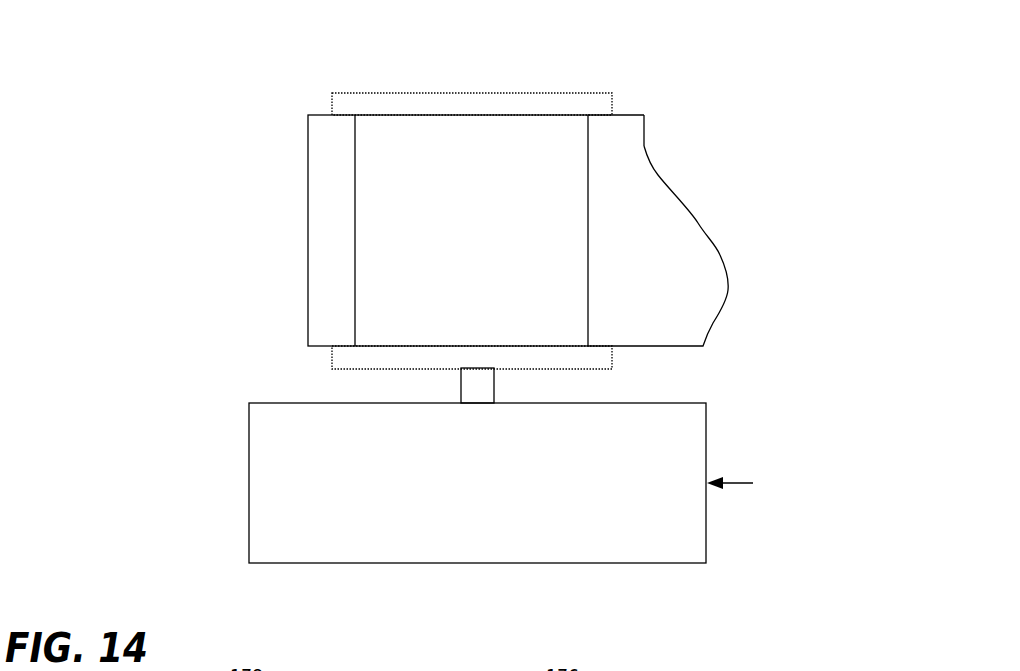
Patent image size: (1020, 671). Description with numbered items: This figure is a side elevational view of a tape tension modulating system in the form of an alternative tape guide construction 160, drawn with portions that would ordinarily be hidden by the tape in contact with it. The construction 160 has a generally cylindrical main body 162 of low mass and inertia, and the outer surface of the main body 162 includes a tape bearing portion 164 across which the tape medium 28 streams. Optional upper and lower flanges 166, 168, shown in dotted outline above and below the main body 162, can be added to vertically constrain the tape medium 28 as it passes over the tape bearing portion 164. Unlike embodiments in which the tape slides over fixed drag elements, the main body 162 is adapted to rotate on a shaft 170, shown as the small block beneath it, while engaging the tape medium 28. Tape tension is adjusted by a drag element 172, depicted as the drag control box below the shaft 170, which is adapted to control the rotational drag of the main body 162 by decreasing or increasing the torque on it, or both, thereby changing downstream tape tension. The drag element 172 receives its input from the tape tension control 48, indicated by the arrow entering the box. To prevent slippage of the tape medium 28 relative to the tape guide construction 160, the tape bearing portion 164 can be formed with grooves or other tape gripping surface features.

The alternative construction 160 is at (226, 109).
The main body 162 is at (588, 148).
The tape bearing portion 164 is at (473, 133).
The upper flange 166 is at (357, 92).
The lower flange 168 is at (332, 362).
The shaft 170 is at (494, 386).
The drag element 172 is at (248, 430).
The tape medium 28 is at (670, 346).
The tape tension control 48 is at (813, 473).